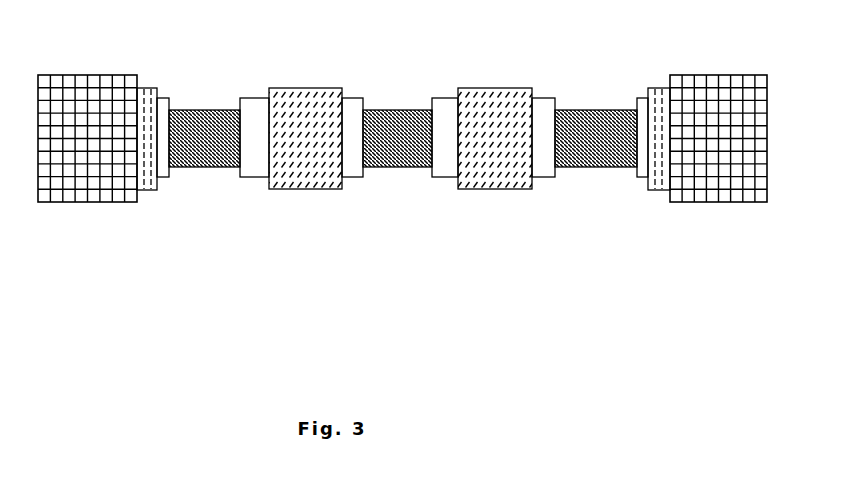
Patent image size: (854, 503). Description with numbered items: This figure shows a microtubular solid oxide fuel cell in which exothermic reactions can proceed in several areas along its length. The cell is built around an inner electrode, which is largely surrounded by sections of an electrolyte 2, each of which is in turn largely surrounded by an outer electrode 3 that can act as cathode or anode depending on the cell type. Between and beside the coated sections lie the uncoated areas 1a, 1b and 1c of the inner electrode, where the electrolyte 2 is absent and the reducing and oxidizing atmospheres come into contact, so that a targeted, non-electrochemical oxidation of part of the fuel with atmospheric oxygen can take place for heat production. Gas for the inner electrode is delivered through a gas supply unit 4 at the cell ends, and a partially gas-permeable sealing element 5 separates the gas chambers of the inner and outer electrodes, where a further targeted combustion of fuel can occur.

The outer edge area of the inner electrode 1a is at (197, 108).
The uncoated area of the inner electrode 1b is at (385, 168).
The uncoated area of the inner electrode 1c is at (588, 178).
The electrolyte 2 is at (257, 152).
The outer electrode 3 is at (493, 153).
The gas supply unit 4 is at (703, 128).
The sealing element 5 is at (158, 90).